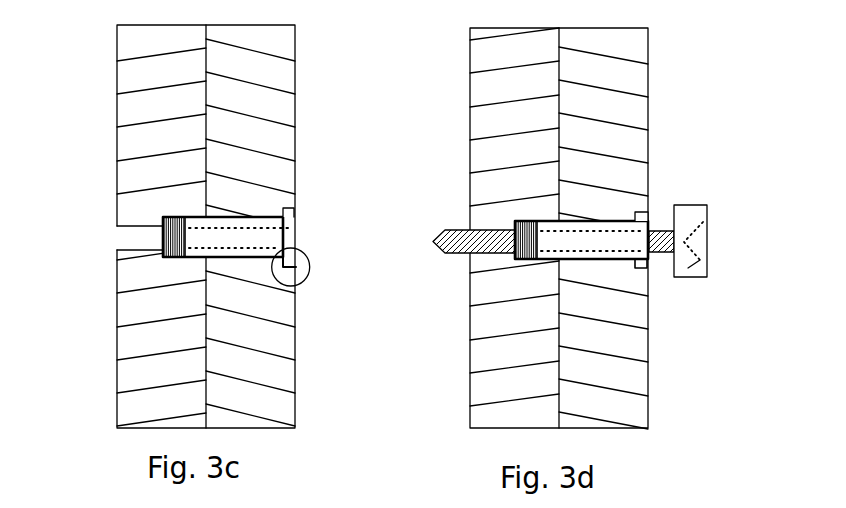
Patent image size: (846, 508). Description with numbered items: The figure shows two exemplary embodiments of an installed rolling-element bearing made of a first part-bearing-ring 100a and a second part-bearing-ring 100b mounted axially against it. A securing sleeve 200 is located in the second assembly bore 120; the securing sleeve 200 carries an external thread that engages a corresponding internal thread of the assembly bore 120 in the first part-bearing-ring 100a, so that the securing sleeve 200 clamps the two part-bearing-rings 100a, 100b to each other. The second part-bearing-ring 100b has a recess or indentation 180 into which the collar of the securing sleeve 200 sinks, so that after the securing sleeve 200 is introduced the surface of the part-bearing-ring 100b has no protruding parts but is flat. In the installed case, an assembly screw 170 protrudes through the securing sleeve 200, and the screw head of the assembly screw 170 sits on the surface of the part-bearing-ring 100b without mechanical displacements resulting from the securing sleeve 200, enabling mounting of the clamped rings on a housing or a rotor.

In FIG. 3C, the first part-bearing-ring 100a is at (133, 79).
In FIG. 3D, the first part-bearing-ring 100a is at (483, 48).
In FIG. 3C, the second part-bearing-ring 100b is at (268, 85).
In FIG. 3D, the second part-bearing-ring 100b is at (615, 50).
In FIG. 3C, the second assembly bore 120 is at (293, 209).
In FIG. 3D, the second assembly bore 120 is at (640, 212).
In FIG. 3C, the securing sleeve 200 is at (296, 242).
In FIG. 3D, the securing sleeve 200 is at (647, 263).
In FIG. 3C, the recess or indentation 180 is at (308, 276).
In FIG. 3D, the recess or indentation 180 is at (640, 268).
In FIG. 3D, the assembly screw 170 is at (702, 262).